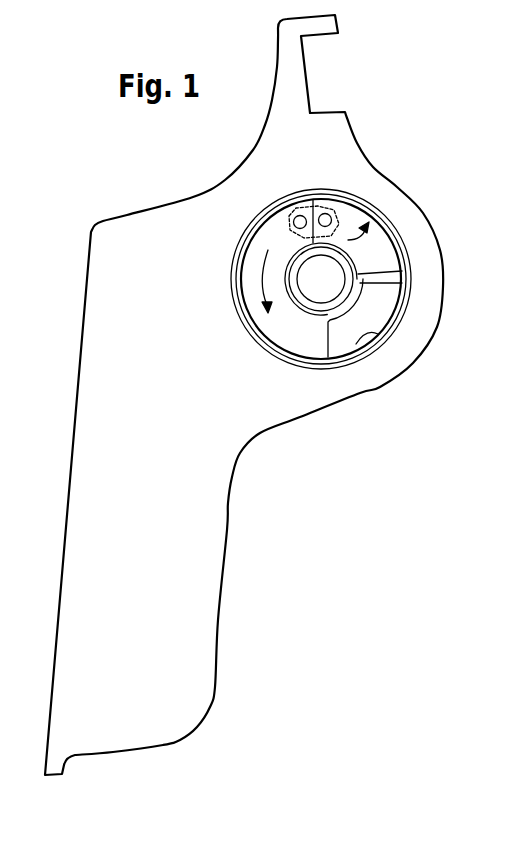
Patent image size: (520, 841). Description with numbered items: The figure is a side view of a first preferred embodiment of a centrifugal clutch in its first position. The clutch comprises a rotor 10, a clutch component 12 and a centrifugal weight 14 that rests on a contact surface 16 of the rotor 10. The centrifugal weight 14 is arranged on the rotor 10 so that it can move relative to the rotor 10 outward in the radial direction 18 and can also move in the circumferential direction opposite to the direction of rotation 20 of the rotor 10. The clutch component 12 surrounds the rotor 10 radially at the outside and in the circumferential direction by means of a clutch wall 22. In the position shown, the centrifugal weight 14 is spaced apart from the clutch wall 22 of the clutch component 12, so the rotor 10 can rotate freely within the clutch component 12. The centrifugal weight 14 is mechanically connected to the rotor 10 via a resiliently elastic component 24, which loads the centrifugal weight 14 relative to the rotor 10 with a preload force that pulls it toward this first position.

The rotor 10 is at (272, 328).
The clutch component 12 is at (210, 545).
The centrifugal weight 14 is at (380, 262).
The contact surface 16 is at (367, 290).
The radial direction 18 is at (385, 238).
The direction of rotation 20 is at (260, 281).
The clutch wall 22 is at (383, 337).
The resiliently elastic component 24 is at (303, 217).